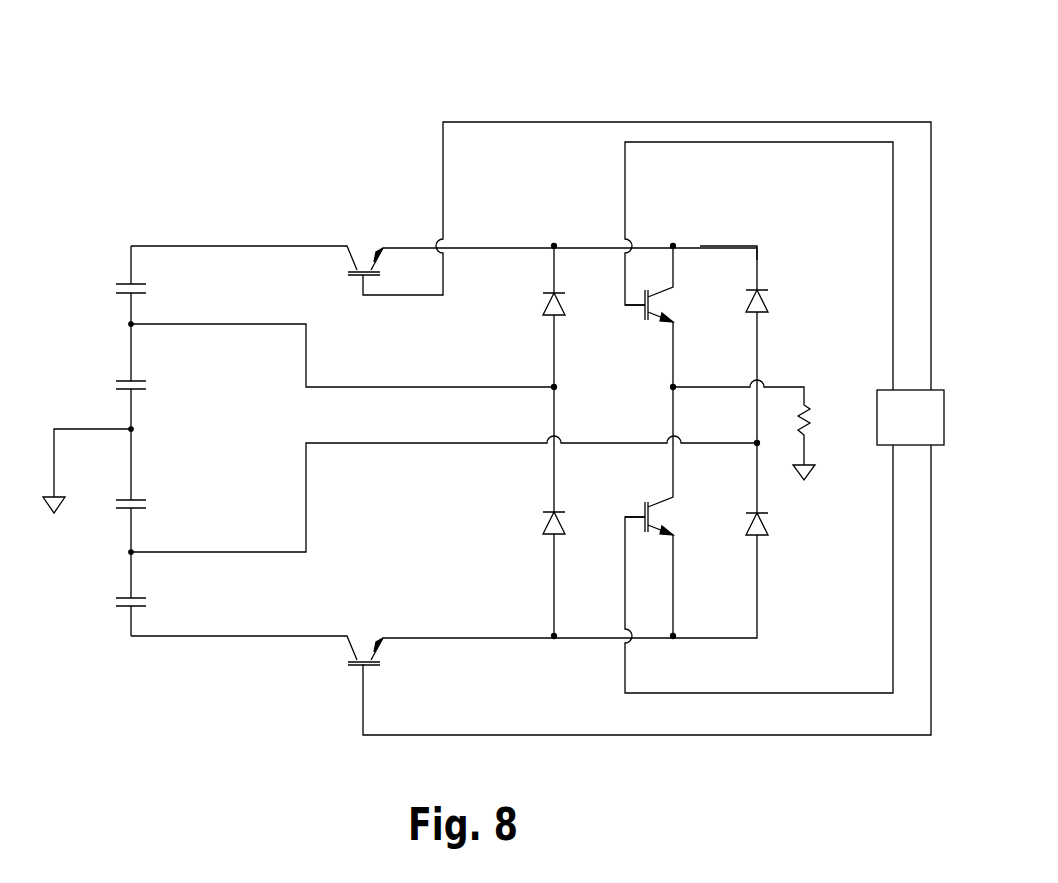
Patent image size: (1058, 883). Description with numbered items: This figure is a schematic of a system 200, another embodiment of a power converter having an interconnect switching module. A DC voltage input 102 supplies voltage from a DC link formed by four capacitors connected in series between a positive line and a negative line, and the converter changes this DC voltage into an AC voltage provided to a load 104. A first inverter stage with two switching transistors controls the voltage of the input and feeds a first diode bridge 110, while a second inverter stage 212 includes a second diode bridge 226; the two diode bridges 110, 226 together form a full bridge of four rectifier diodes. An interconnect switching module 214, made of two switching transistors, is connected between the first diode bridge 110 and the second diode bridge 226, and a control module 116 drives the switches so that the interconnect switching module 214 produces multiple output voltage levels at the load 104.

The system 200 is at (137, 27).
The second inverter stage 212 is at (210, 162).
The DC voltage input 102 is at (103, 383).
The first diode bridge 110 is at (552, 242).
The second diode bridge 226 is at (758, 242).
The interconnect switching module 214 is at (655, 352).
The load 104 is at (815, 418).
The control module 116 is at (925, 426).